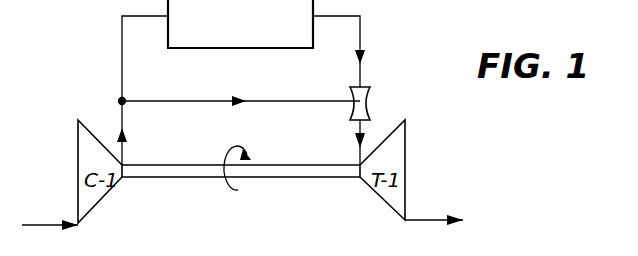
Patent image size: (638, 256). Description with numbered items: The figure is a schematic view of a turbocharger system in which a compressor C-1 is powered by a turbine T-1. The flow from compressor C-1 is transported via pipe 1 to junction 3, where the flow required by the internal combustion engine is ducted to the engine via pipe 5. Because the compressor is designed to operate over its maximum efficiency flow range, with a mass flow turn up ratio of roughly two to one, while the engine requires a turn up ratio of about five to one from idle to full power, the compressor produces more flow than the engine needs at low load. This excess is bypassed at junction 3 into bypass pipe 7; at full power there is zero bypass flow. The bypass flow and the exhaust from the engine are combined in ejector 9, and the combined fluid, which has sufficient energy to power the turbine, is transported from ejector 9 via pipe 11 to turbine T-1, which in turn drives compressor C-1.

The pipe 1 is at (128, 165).
The junction 3 is at (117, 101).
The pipe 5 is at (120, 52).
The bypass pipe 7 is at (144, 101).
The ejector 9 is at (372, 93).
The pipe 11 is at (366, 126).